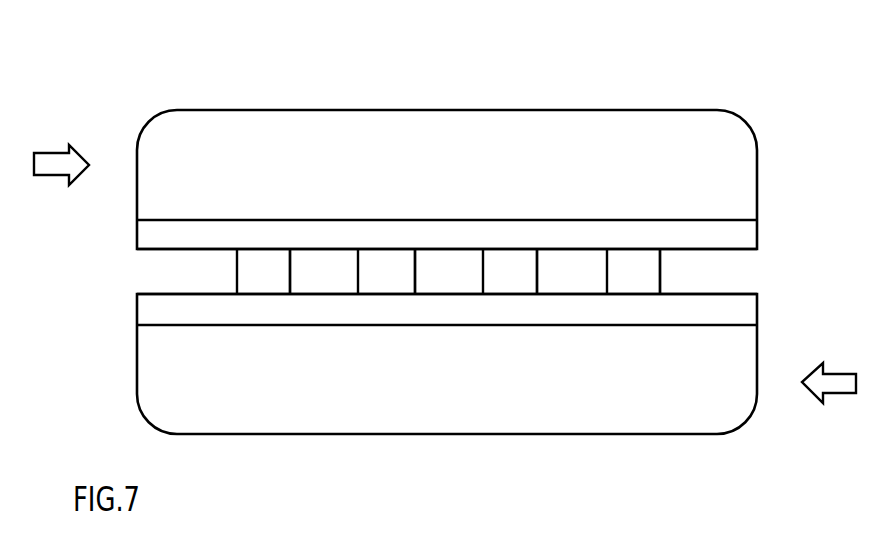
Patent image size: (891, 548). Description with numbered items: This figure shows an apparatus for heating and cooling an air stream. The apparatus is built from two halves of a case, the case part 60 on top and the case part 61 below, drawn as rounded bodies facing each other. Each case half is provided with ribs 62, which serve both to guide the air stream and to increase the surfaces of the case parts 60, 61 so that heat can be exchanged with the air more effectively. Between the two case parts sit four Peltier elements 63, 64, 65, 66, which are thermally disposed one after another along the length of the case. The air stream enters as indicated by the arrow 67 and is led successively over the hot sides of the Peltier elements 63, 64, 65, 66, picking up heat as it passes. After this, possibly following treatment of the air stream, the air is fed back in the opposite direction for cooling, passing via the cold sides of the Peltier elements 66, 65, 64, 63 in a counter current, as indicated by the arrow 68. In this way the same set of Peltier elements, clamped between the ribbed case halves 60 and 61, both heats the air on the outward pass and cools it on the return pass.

The case half 60 is at (449, 172).
The case half 61 is at (230, 369).
The ribs 62 is at (702, 236).
The Peltier element 63 is at (264, 272).
The Peltier element 64 is at (386, 272).
The Peltier element 65 is at (510, 272).
The Peltier element 66 is at (634, 270).
The arrow 67 is at (52, 165).
The arrow 68 is at (839, 382).